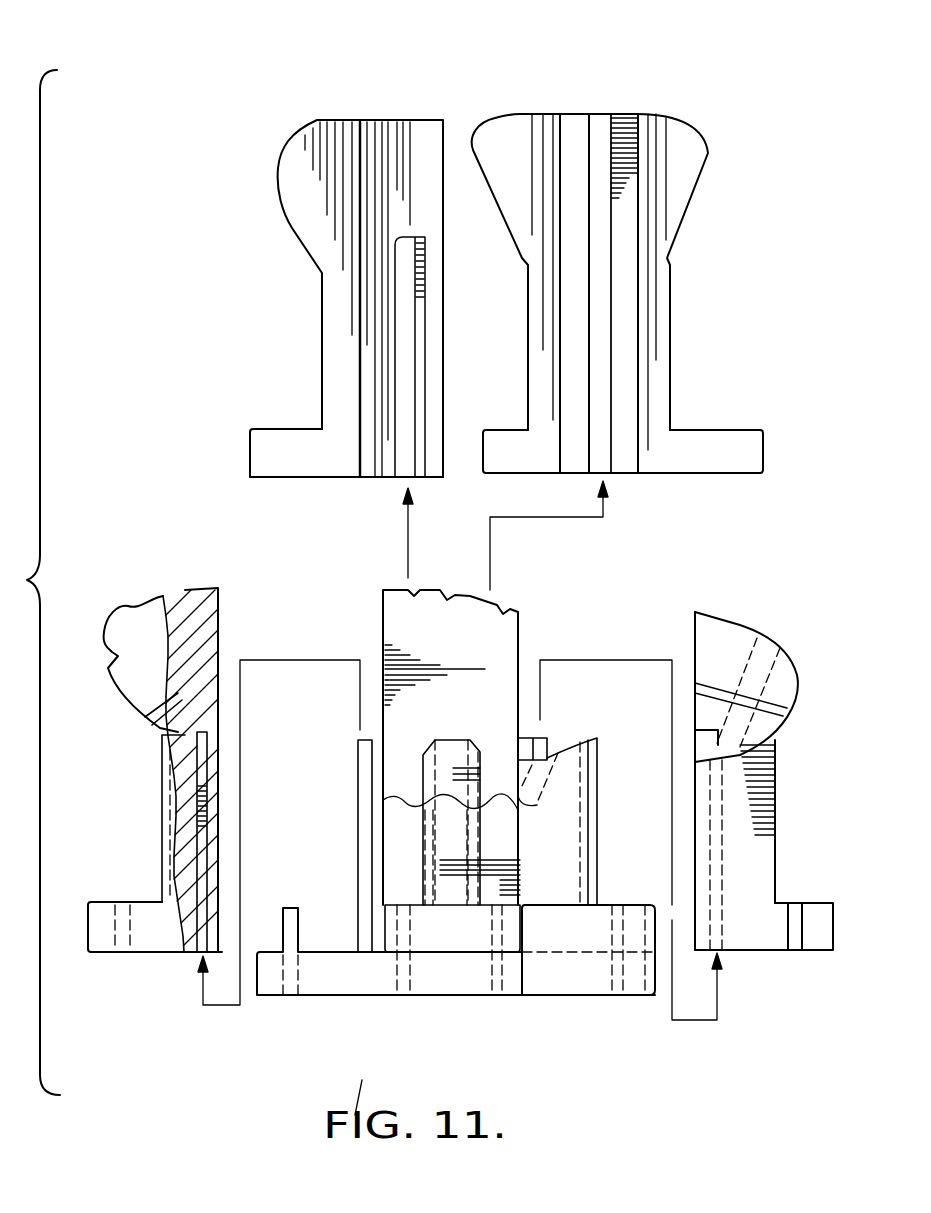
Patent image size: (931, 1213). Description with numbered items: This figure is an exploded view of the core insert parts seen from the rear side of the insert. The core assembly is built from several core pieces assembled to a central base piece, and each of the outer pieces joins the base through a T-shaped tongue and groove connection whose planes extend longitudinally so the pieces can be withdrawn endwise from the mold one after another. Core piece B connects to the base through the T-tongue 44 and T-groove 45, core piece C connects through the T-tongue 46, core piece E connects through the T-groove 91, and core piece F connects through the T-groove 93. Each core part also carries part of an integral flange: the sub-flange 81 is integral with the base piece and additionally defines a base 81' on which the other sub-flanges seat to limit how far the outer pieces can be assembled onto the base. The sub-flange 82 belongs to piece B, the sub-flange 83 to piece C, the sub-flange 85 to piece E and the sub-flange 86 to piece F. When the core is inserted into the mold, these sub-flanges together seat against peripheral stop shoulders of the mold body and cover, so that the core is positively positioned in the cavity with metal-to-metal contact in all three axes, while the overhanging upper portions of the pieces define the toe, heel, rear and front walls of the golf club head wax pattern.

The T-tongue 44 is at (357, 787).
The T-groove 45 is at (208, 758).
The T-tongue 46 is at (550, 742).
The sub-flange 81 is at (588, 998).
The base 81' is at (456, 979).
The sub-flange 82 is at (115, 905).
The sub-flange 83 is at (815, 903).
The sub-flange 85 is at (250, 450).
The sub-flange 86 is at (760, 430).
The T-groove 91 is at (396, 306).
The T-groove 93 is at (604, 290).